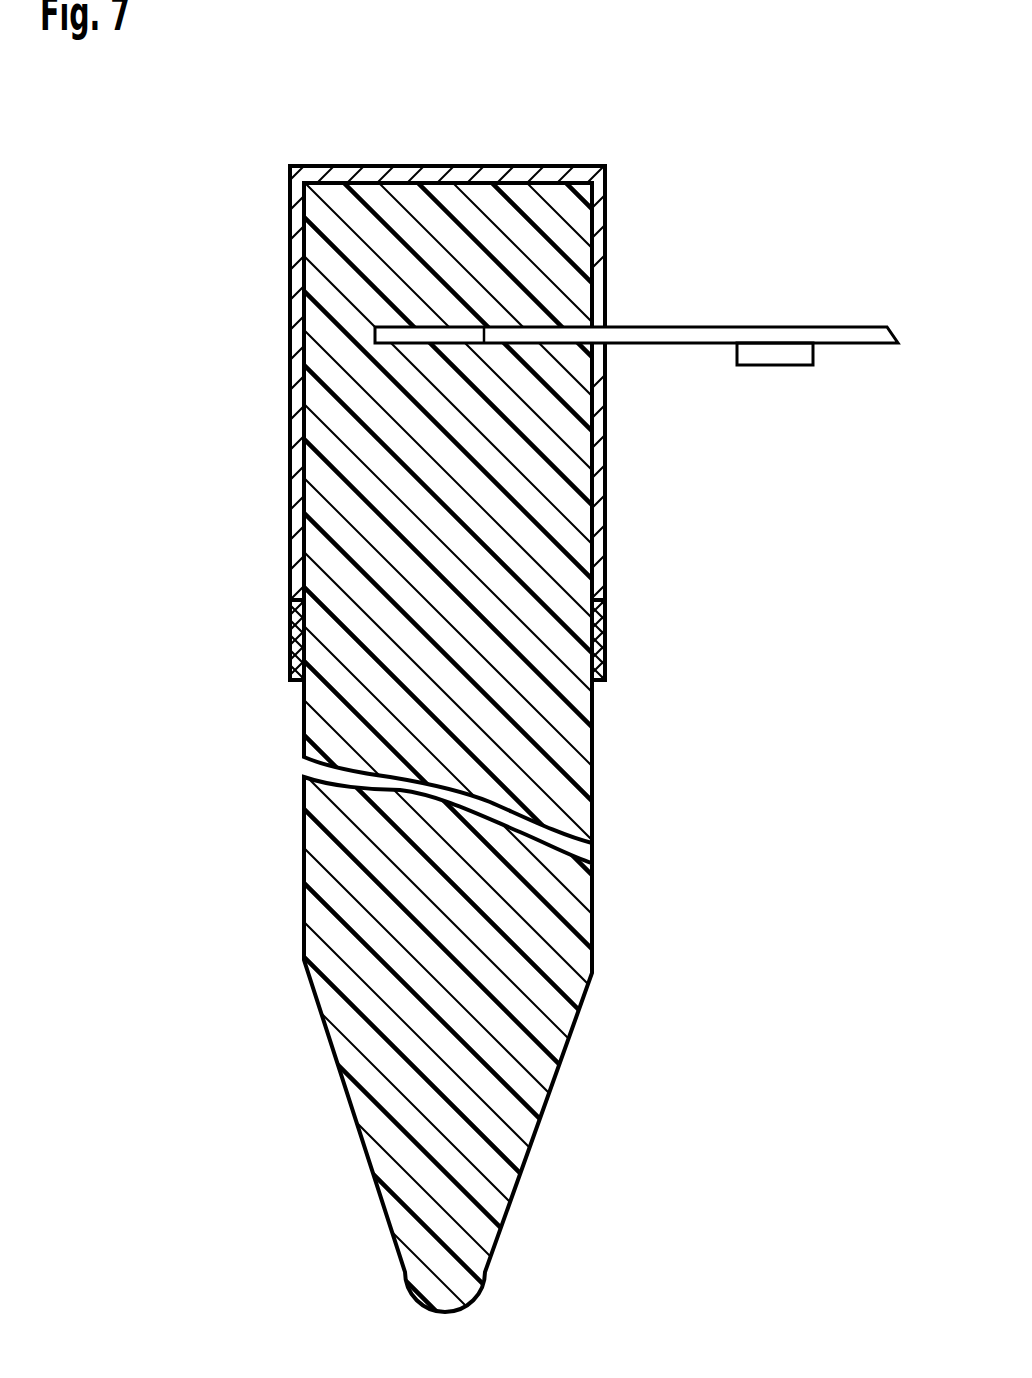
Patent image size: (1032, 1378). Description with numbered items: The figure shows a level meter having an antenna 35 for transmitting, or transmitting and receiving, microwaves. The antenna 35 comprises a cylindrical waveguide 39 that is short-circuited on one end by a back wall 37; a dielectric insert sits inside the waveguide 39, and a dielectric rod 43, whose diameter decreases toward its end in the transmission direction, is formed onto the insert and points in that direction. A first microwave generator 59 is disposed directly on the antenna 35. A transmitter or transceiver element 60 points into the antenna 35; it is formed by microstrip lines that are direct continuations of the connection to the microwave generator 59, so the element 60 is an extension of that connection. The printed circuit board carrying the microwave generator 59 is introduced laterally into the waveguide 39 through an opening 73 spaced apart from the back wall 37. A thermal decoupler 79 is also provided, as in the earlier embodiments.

The antenna 35 is at (238, 197).
The back wall 37 is at (412, 165).
The cylindrical waveguide 39 is at (290, 460).
The dielectric rod 43 is at (567, 993).
The first microwave generator 59 is at (803, 365).
The transmitter or transceiver element 60 is at (418, 344).
The opening 73 is at (606, 377).
The thermal decoupler 79 is at (290, 626).